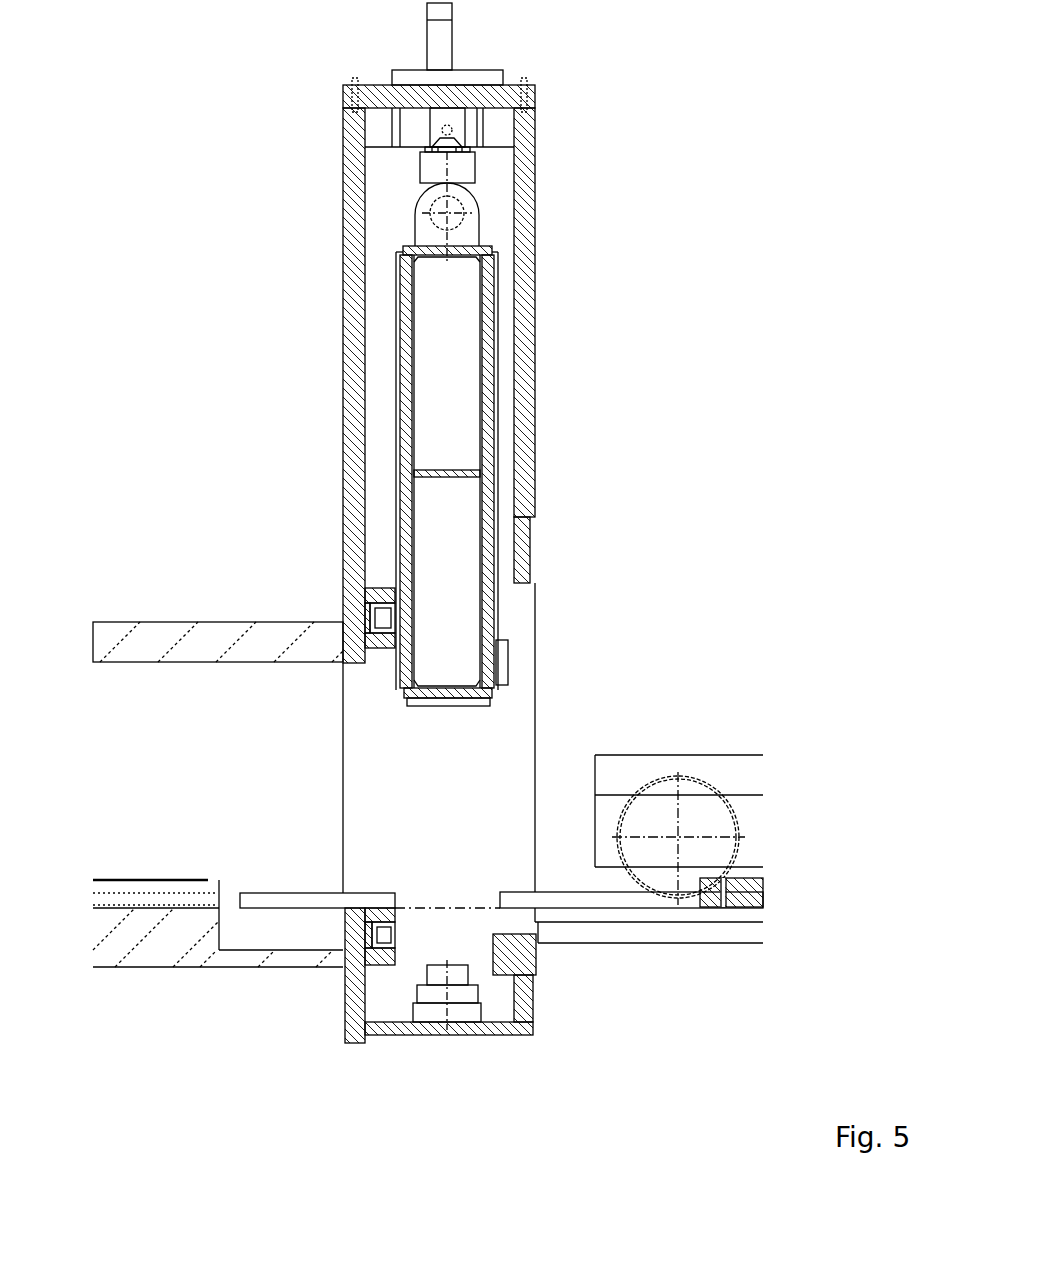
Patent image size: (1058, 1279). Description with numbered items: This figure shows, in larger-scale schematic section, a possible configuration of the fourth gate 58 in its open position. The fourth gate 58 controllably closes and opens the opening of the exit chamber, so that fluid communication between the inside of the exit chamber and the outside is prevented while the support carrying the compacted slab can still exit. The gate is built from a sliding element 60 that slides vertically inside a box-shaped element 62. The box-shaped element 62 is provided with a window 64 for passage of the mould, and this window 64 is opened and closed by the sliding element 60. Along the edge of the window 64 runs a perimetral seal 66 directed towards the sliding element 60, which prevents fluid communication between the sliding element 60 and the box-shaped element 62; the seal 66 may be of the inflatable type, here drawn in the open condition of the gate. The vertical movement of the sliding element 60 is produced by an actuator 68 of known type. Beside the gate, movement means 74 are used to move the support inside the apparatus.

The fourth gate 58 is at (325, 265).
The sliding element 60 is at (490, 397).
The box-shaped element 62 is at (525, 242).
The window 64 is at (334, 748).
The perimetral seal 66 is at (372, 617).
The actuator 68 is at (478, 177).
The movement means 74 is at (679, 750).